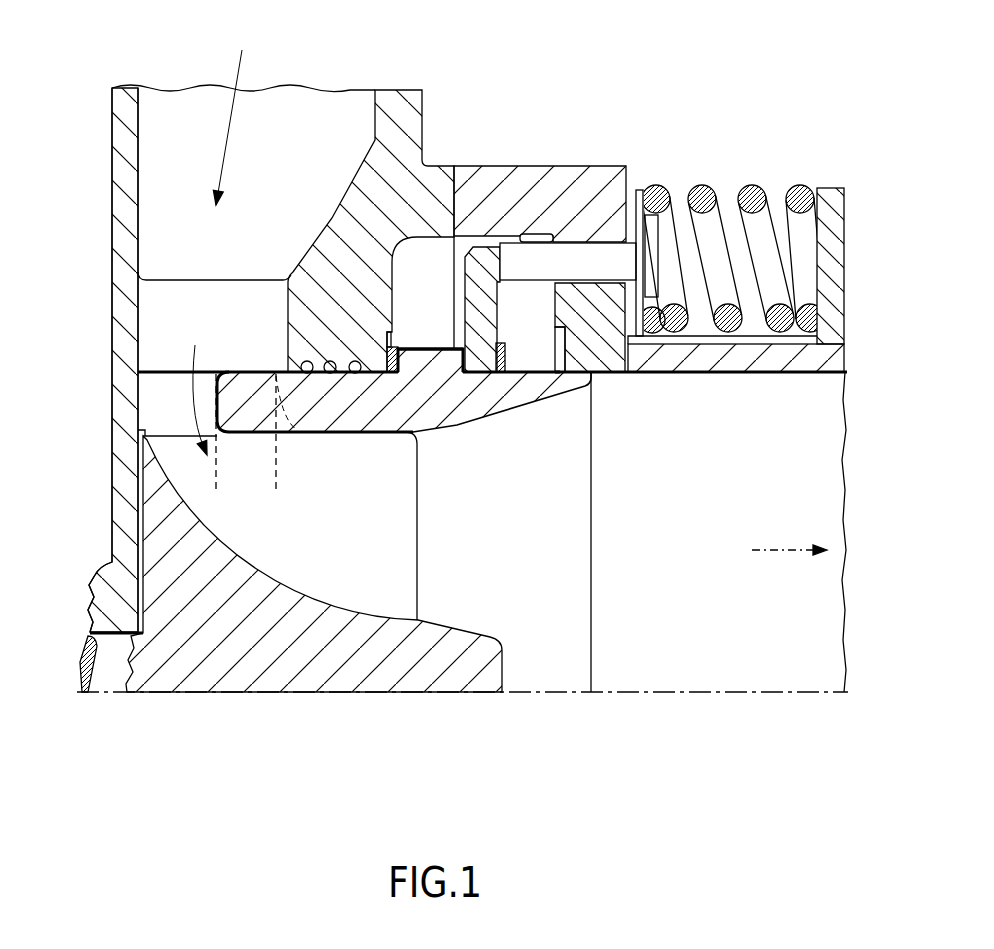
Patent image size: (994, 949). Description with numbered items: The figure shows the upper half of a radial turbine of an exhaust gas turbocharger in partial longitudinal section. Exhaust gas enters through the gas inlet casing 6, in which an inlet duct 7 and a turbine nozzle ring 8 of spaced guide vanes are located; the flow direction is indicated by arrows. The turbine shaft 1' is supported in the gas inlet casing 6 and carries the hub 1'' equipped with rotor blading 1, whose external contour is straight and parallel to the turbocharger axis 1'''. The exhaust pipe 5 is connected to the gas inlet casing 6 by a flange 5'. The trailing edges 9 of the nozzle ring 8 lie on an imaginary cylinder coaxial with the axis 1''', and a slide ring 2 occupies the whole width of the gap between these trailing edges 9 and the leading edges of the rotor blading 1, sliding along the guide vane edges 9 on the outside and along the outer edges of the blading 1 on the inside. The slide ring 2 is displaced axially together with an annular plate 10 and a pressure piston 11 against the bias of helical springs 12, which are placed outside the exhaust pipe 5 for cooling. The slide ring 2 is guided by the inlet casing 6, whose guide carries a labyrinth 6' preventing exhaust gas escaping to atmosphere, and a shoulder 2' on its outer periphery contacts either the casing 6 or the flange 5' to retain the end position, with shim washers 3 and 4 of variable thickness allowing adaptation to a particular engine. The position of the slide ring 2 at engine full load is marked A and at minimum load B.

The rotor blading 1 is at (282, 596).
The turbine shaft 1' is at (128, 701).
The hub 1'' is at (314, 598).
The turbocharger axis 1''' is at (462, 564).
The slide ring 2 is at (404, 423).
The shoulder 2' is at (430, 341).
The shim washer 3 is at (395, 347).
The shim washer 4 is at (503, 357).
The exhaust pipe 5 is at (701, 324).
The flange 5' is at (540, 148).
The gas inlet casing 6 is at (281, 326).
The labyrinth 6' is at (323, 285).
The inlet duct 7 is at (234, 112).
The turbine nozzle ring 8 is at (247, 304).
The trailing edges 9 is at (170, 372).
The annular plate 10 is at (475, 350).
The pressure piston 11 is at (598, 258).
The helical spring 12 is at (704, 186).
The slide ring position at engine full load A is at (287, 436).
The slide ring position at minimum load B is at (226, 436).